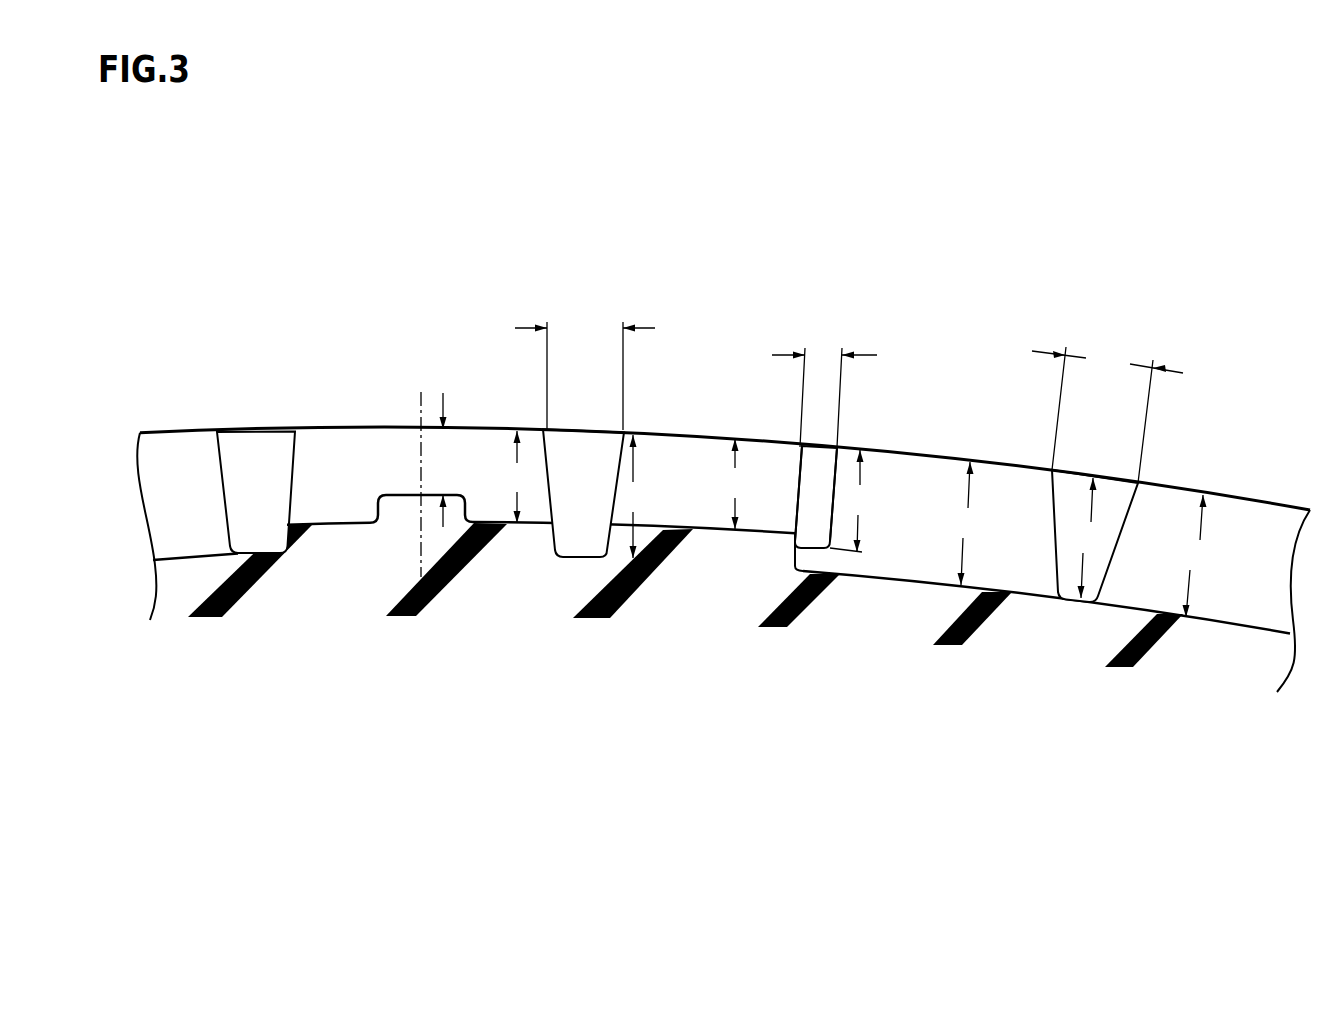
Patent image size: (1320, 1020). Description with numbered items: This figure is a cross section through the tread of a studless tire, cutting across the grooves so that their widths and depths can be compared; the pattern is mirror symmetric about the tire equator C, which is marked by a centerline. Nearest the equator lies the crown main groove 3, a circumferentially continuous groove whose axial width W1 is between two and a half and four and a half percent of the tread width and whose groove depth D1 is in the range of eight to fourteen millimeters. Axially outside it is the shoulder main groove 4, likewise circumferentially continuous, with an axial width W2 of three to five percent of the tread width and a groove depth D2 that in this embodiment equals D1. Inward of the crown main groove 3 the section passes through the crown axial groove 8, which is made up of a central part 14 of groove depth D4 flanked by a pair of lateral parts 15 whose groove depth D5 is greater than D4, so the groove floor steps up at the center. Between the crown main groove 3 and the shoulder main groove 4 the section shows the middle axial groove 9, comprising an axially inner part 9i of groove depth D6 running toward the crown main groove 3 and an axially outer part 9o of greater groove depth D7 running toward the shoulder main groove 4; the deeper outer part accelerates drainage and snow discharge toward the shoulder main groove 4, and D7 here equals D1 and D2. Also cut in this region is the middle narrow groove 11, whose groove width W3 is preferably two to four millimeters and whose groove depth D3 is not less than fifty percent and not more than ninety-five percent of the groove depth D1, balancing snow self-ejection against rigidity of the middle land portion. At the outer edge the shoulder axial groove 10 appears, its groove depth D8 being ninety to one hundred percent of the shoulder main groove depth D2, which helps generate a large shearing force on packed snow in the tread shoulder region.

The crown main groove 3 is at (588, 447).
The shoulder main groove 4 is at (1072, 490).
The crown axial groove 8 is at (415, 382).
The middle axial groove 9 is at (810, 379).
The axially inner part 9i is at (717, 452).
The axially outer part 9o is at (902, 475).
The shoulder axial groove 10 is at (1247, 523).
The middle narrow groove 11 is at (817, 460).
The central part 14 is at (397, 463).
The lateral parts 15 is at (333, 510).
The tire equator C is at (422, 470).
The axial width of the crown main groove W1 is at (585, 371).
The axial width of the shoulder main groove W2 is at (1107, 415).
The groove width of the middle narrow groove W3 is at (824, 384).
The groove depth of the crown main groove D1 is at (635, 496).
The groove depth of the shoulder main groove D2 is at (1086, 538).
The groove depth of the middle narrow groove D3 is at (853, 501).
The groove depth of the central part D4 is at (443, 460).
The groove depth of the lateral parts D5 is at (513, 477).
The groove depth of the axially inner part D6 is at (737, 484).
The groove depth of the axially outer part D7 is at (963, 523).
The groove depth of the shoulder axial groove D8 is at (1196, 556).